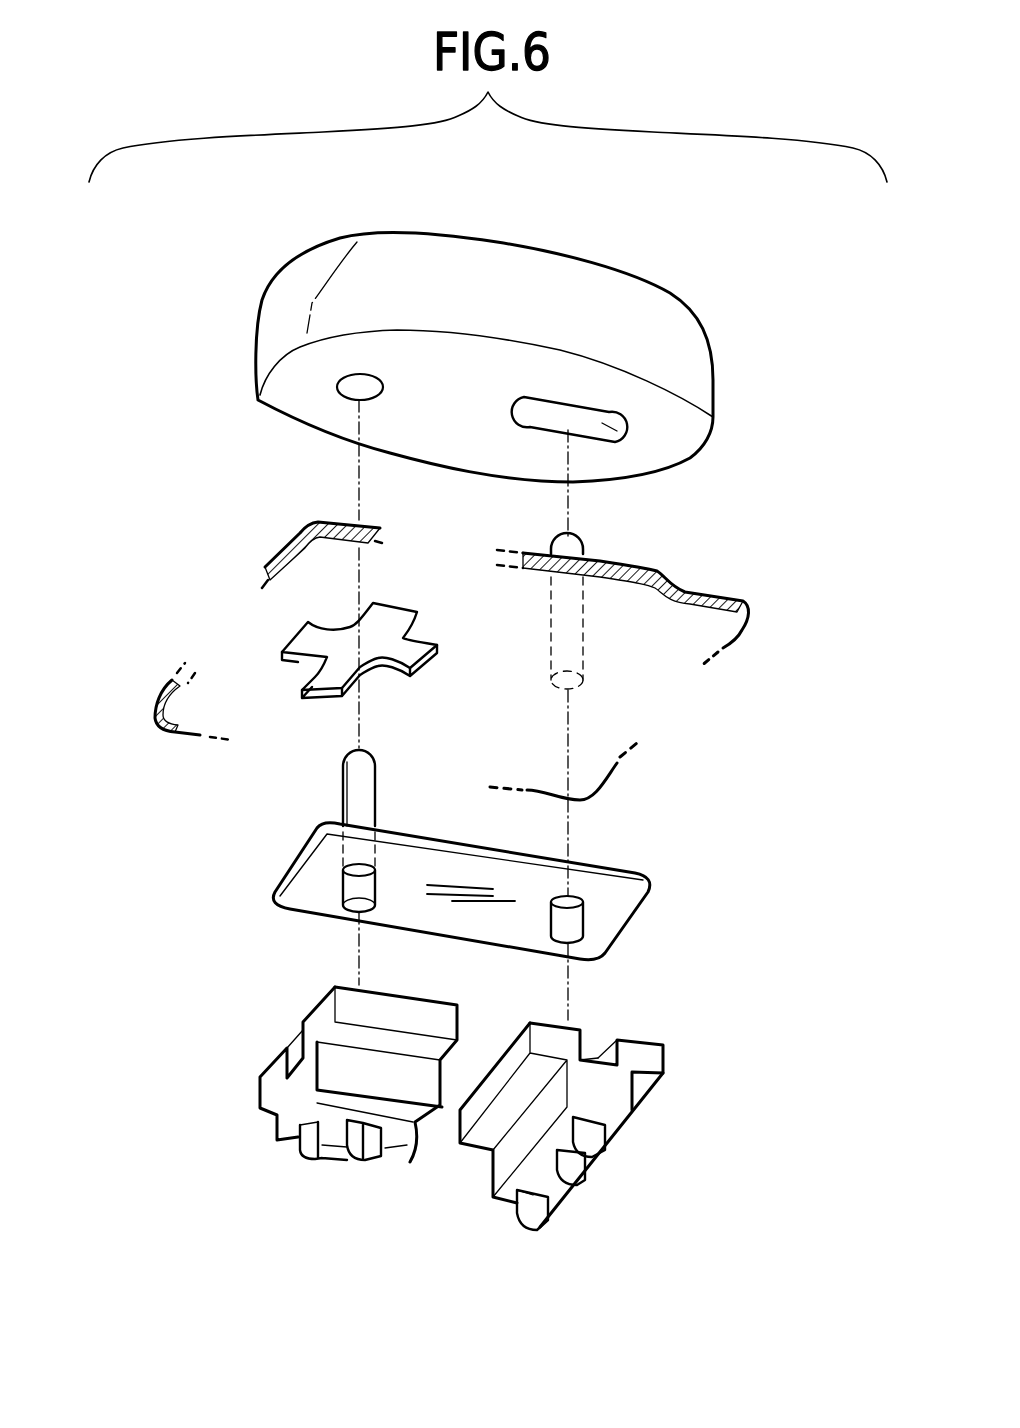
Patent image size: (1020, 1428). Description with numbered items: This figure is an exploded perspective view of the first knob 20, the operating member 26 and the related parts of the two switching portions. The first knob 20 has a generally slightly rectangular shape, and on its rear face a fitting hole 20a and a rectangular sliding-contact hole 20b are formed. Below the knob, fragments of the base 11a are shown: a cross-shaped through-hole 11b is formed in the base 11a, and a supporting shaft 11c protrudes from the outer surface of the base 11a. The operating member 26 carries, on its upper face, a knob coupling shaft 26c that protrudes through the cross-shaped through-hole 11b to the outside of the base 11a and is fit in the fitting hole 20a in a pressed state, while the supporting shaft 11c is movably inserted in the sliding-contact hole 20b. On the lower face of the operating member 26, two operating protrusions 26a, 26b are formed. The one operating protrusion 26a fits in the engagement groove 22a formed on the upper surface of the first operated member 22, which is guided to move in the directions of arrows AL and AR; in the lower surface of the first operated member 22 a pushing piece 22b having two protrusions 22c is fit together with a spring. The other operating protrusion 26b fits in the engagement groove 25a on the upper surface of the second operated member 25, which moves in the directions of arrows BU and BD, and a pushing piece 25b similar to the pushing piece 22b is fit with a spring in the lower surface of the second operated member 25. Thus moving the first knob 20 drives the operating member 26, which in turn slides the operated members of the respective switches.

The first knob 20 is at (322, 243).
The fitting hole 20a is at (350, 387).
The sliding-contact hole 20b is at (630, 436).
The base 11a is at (702, 590).
The cross-shaped through-hole 11b is at (317, 640).
The supporting shaft 11c is at (588, 553).
The operating member 26 is at (607, 855).
The operating protrusion 26a is at (580, 920).
The operating protrusion 26b is at (340, 895).
The knob coupling shaft 26c is at (340, 783).
The second operated member 25 is at (296, 1111).
The engagement groove 25a is at (297, 1043).
The pushing piece 25b is at (302, 1158).
The first operated member 22 is at (611, 1139).
The engagement groove 22a is at (600, 1048).
The pushing piece 22b is at (597, 1138).
The protrusions 22c is at (597, 1172).